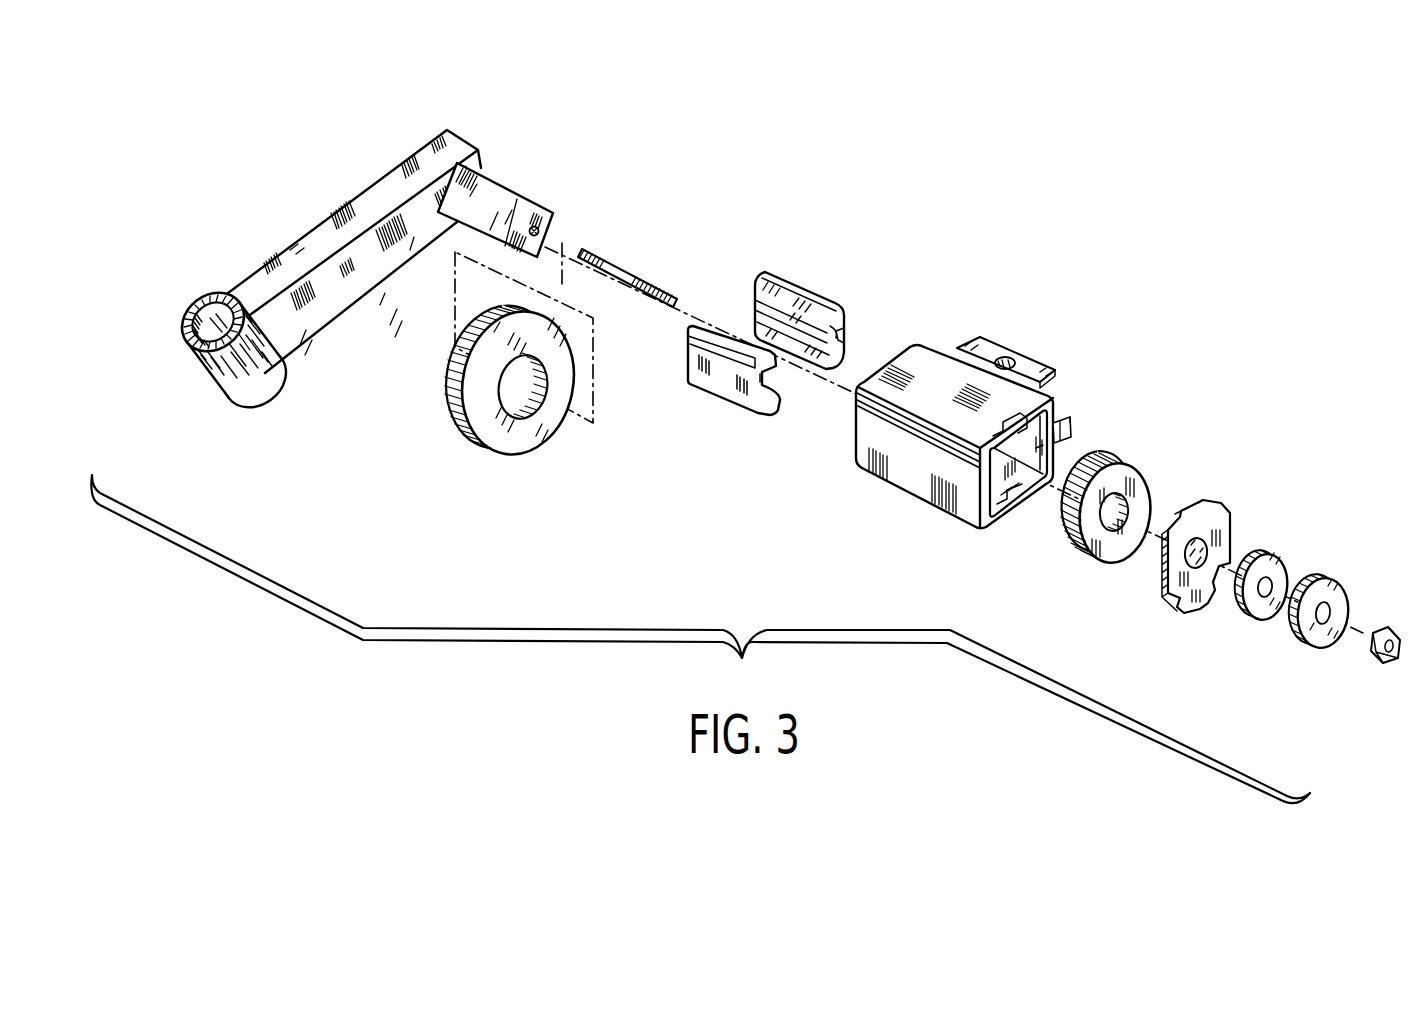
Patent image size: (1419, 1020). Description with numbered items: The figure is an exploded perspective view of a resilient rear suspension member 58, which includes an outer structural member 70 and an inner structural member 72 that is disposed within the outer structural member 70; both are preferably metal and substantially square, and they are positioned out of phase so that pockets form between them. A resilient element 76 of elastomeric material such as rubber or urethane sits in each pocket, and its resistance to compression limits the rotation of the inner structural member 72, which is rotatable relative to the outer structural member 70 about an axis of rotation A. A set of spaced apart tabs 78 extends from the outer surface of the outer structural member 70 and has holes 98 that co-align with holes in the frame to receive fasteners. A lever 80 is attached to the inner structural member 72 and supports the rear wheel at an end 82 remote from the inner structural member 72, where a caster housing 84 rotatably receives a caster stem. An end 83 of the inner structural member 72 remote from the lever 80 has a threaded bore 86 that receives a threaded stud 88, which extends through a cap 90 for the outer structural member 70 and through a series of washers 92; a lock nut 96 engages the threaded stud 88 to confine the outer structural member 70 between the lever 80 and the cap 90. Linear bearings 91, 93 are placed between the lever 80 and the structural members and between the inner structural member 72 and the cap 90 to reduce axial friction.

The resilient rear suspension member 58 is at (871, 190).
The outer structural member 70 is at (933, 370).
The inner structural member 72 is at (507, 198).
The resilient element 76 is at (712, 328).
The tabs 78 is at (1034, 362).
The lever 80 is at (317, 247).
The end of the lever 82 is at (192, 380).
The end of the inner structural member 83 is at (548, 207).
The caster housing 84 is at (283, 362).
The threaded bore 86 is at (541, 229).
The threaded stud 88 is at (612, 273).
The cap 90 is at (1175, 598).
The linear bearing 91 is at (1120, 452).
The washers 92 is at (1263, 532).
The linear bearing 93 is at (447, 405).
The lock nut 96 is at (1377, 653).
The holes 98 is at (1007, 357).
The axis of rotation A is at (845, 384).